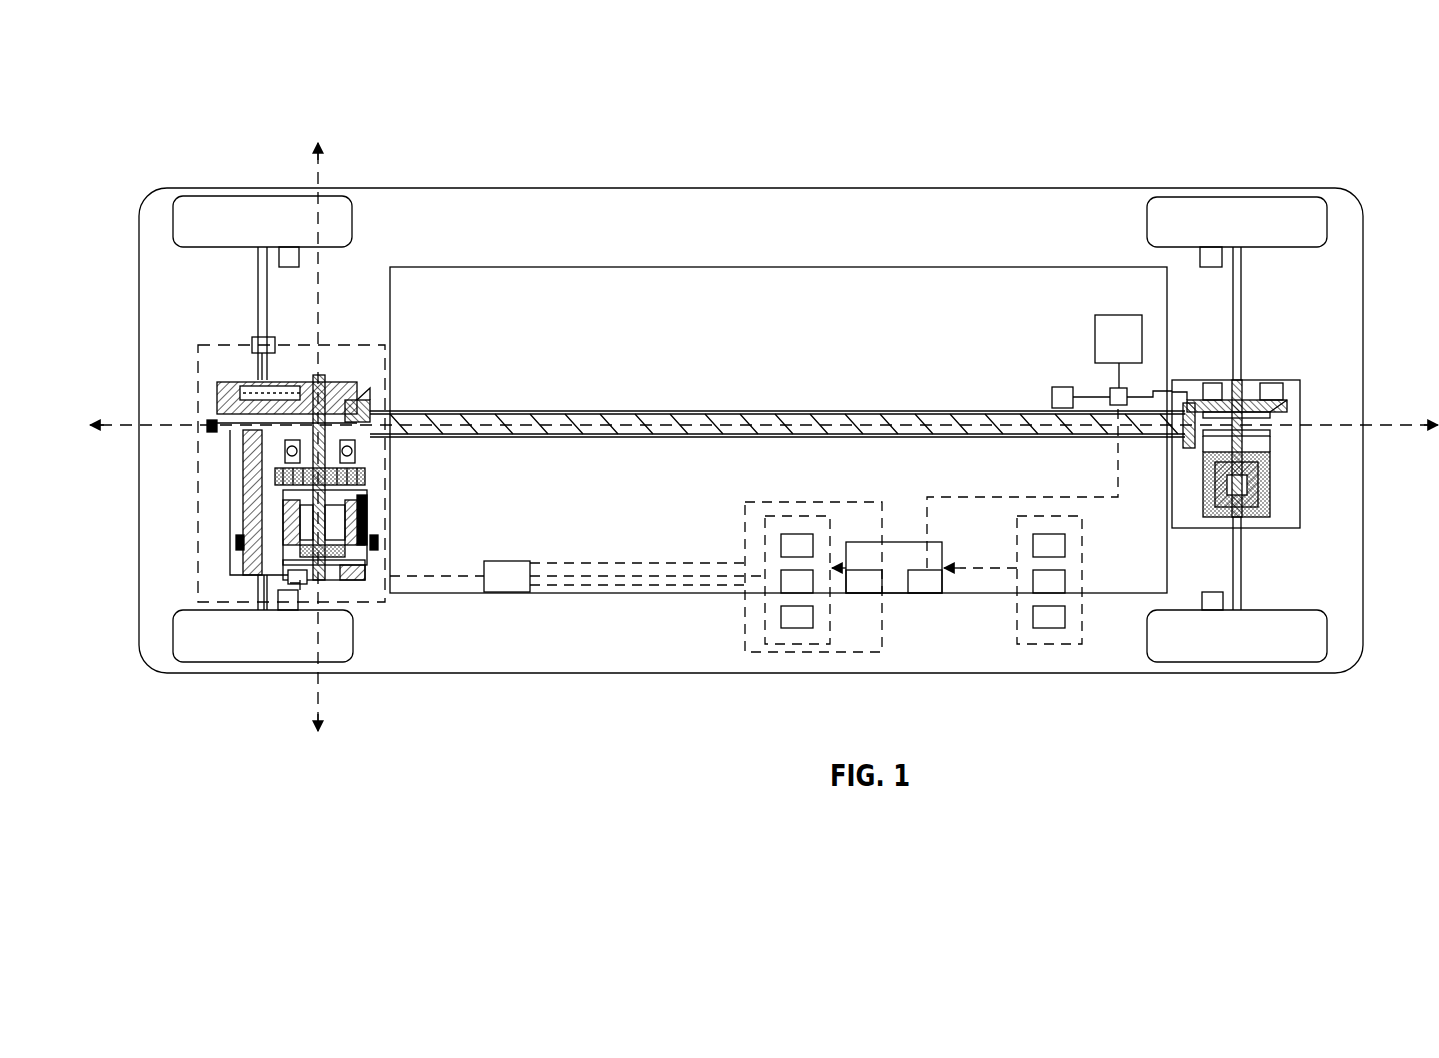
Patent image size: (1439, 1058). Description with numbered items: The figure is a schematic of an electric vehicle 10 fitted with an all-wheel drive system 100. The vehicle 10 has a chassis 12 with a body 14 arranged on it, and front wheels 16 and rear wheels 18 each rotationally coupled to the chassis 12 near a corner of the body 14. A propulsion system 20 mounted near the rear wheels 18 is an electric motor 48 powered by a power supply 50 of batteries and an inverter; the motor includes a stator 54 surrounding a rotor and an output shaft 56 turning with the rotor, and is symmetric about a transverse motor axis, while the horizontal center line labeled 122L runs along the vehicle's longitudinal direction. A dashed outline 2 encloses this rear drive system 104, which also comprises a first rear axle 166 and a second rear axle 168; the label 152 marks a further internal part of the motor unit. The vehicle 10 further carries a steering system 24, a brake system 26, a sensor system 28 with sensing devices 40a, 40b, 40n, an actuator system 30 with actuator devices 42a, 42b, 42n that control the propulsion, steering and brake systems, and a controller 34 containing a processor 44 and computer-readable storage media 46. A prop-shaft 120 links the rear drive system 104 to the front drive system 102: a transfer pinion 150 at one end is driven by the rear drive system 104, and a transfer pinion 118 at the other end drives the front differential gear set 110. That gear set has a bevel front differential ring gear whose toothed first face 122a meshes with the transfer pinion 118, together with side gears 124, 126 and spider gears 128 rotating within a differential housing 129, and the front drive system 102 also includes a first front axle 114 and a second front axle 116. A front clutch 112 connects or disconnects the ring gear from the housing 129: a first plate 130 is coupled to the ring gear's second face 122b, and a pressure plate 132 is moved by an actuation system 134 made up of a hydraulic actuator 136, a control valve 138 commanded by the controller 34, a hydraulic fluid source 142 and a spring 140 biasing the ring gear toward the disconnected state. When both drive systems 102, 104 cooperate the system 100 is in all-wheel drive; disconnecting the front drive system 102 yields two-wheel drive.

The drive unit region 2 is at (198, 380).
The vehicle 10 is at (617, 186).
The chassis 12 is at (856, 410).
The body 14 is at (1010, 188).
The front wheels 16 is at (1225, 196).
The rear wheels 18 is at (263, 196).
The propulsion system 20 is at (392, 545).
The steering system 24 is at (1095, 345).
The brake system 26 is at (285, 254).
The sensor system 28 is at (1042, 526).
The actuator system 30 is at (779, 583).
The controller 34 is at (924, 597).
The sensing device 40a is at (1033, 546).
The sensing device 40b is at (1065, 582).
The sensing device 40n is at (1033, 616).
The actuator device 42a is at (781, 546).
The actuator device 42b is at (781, 584).
The actuator device 42n is at (797, 628).
The processor 44 is at (858, 594).
The computer-readable storage device or media 46 is at (920, 594).
The electric motor 48 is at (365, 502).
The power supply 50 is at (506, 561).
The stator 54 is at (350, 577).
The output shaft 56 is at (365, 480).
The all-wheel drive system 100 is at (455, 203).
The front drive system 102 is at (1345, 252).
The rear drive system 104 is at (267, 497).
The front differential gear set 110 is at (1251, 421).
The front clutch 112 is at (1293, 400).
The first front axle 114 is at (1247, 265).
The second front axle 116 is at (1240, 572).
The transfer pinion 118 is at (1180, 400).
The prop-shaft 120 is at (726, 408).
The first face 122a is at (1181, 405).
The second face 122b is at (1283, 398).
The lateral axis 122L is at (1412, 418).
The side gear 124 is at (1260, 467).
The side gear 126 is at (1247, 520).
The spider gears 128 is at (1258, 498).
The differential housing 129 is at (1282, 453).
The first plate 130 is at (1270, 430).
The pressure plate 132 is at (1265, 392).
The actuation system 134 is at (1190, 377).
The hydraulic actuator 136 is at (1212, 385).
The control valve 138 is at (1112, 388).
The spring 140 is at (1279, 385).
The hydraulic fluid source 142 is at (1052, 395).
The transfer pinion 150 is at (368, 410).
The motor shaft 152 is at (300, 476).
The first rear axle 166 is at (258, 305).
The second rear axle 168 is at (257, 588).